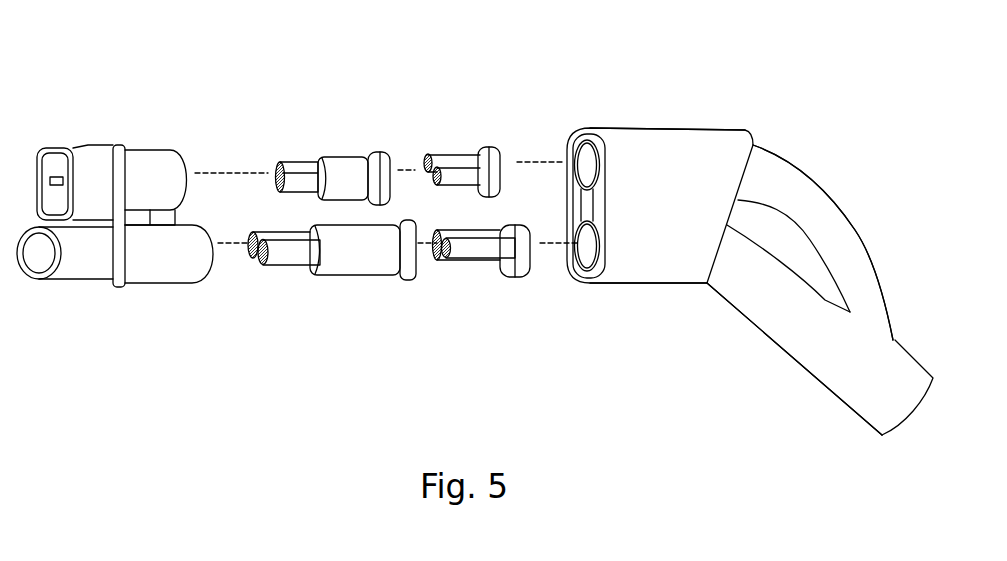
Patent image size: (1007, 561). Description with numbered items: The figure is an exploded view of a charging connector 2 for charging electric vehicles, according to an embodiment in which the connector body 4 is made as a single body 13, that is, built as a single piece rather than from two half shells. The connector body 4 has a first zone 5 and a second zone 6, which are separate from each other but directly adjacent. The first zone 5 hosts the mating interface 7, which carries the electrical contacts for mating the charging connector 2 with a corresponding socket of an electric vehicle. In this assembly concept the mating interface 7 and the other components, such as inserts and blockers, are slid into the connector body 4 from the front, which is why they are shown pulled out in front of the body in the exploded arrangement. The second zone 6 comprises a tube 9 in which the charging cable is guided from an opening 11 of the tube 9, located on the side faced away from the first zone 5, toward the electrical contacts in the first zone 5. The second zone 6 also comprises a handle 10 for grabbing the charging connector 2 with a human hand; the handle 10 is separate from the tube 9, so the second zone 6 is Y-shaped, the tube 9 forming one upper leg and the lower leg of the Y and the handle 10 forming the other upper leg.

The charging connector 2 is at (595, 305).
The connector body 4 is at (745, 100).
The first zone 5 is at (658, 158).
The second zone 6 is at (810, 320).
The mating interface 7 is at (80, 265).
The tube 9 is at (760, 297).
The handle 10 is at (805, 185).
The opening 11 is at (903, 425).
The single body 13 is at (677, 250).